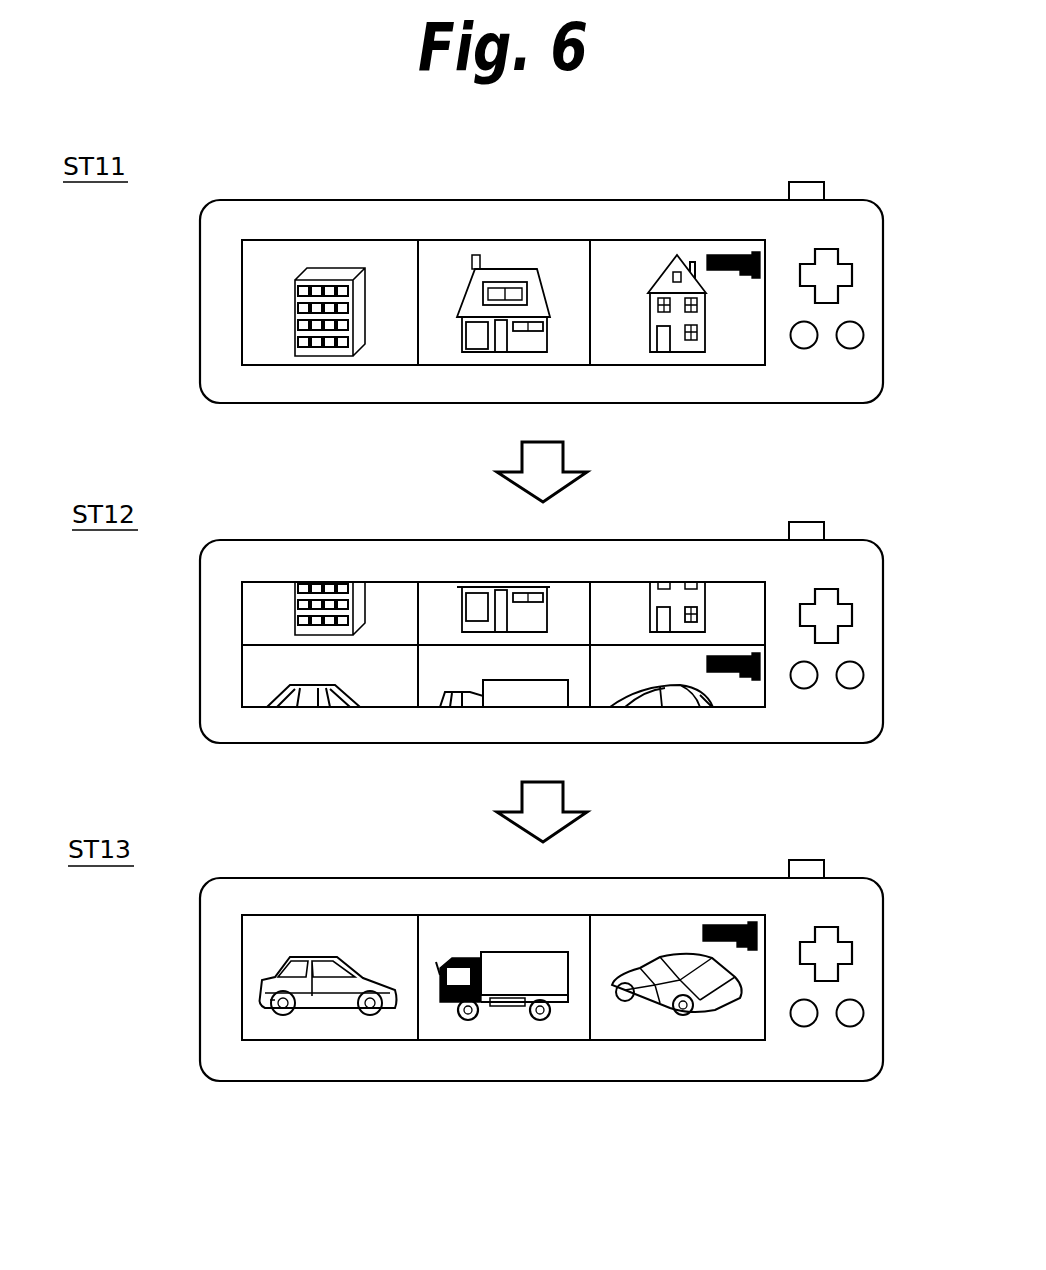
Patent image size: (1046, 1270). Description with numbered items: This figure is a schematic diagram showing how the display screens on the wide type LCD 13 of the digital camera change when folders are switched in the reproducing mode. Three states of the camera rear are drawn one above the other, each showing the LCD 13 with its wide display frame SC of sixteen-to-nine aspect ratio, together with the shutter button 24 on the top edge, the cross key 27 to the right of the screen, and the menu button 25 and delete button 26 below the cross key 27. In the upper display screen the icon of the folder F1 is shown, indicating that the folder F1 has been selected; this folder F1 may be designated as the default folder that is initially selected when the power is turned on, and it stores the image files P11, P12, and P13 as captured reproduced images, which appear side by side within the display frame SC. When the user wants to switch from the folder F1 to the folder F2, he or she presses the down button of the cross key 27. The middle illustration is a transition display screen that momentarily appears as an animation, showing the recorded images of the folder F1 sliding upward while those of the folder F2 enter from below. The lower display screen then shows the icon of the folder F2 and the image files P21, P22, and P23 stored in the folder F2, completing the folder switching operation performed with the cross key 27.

The LCD 13 is at (283, 240).
The wide display frame SC is at (242, 282).
The folder F1 is at (242, 332).
The folder F2 is at (242, 682).
The image file P11 is at (372, 246).
The image file P12 is at (500, 246).
The image file P13 is at (667, 246).
The image file P21 is at (350, 925).
The image file P22 is at (457, 925).
The image file P23 is at (637, 925).
The shutter button 24 is at (806, 182).
The menu button 25 is at (806, 349).
The delete button 26 is at (850, 349).
The cross key 27 is at (843, 276).